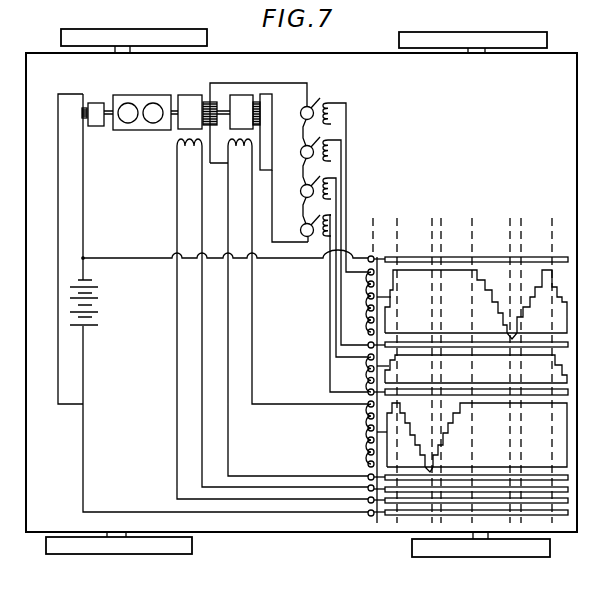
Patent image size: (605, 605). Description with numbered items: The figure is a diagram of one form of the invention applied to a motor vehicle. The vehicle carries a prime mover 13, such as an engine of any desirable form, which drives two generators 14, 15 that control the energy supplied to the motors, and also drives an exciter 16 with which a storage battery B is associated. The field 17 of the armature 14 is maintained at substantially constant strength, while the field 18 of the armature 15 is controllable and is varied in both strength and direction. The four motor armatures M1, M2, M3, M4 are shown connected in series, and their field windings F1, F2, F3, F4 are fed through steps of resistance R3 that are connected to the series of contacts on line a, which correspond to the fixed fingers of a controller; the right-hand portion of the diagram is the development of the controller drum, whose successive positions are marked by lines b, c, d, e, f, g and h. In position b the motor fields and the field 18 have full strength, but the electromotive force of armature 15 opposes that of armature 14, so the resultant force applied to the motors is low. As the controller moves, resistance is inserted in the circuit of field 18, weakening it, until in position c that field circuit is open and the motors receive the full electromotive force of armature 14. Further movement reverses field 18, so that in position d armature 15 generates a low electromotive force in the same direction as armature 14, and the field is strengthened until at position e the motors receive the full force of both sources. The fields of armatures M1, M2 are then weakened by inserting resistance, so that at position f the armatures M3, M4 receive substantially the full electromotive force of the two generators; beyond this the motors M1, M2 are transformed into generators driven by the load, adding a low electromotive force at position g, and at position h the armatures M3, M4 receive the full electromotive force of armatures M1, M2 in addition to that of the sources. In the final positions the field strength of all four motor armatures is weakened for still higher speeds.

The prime mover 13 is at (142, 103).
The generator armature 14 is at (197, 112).
The generator armature 15 is at (245, 112).
The exciter 16 is at (96, 104).
The field of armature 14 17 is at (274, 319).
The field of armature 15 18 is at (299, 307).
The storage battery B is at (91, 302).
The motor armature M1 is at (295, 115).
The motor armature M2 is at (295, 154).
The motor armature M3 is at (295, 193).
The motor armature M4 is at (295, 232).
The field winding F1 is at (341, 179).
The field winding F2 is at (341, 235).
The field winding F3 is at (341, 261).
The field winding F4 is at (341, 297).
The field resistance steps R3 is at (351, 368).
The contact line a is at (371, 227).
The controller position b is at (396, 361).
The controller position c is at (430, 361).
The controller position d is at (441, 361).
The controller position e is at (471, 361).
The controller position f is at (507, 361).
The controller position g is at (521, 361).
The controller position h is at (550, 361).